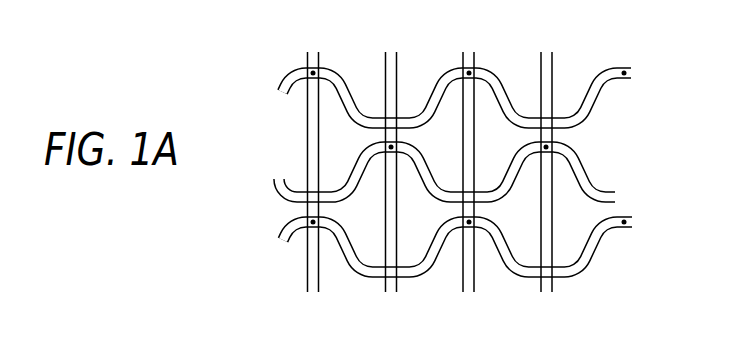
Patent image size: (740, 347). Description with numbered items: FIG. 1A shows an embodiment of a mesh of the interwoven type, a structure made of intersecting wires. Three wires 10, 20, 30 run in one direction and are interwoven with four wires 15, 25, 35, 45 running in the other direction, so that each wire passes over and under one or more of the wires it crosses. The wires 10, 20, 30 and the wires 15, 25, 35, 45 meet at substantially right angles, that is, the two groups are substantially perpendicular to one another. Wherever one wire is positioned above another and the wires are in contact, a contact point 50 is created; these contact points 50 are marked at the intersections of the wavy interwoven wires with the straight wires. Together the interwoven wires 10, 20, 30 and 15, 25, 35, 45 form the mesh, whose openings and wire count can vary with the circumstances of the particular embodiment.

The wire 10 is at (606, 68).
The wire 20 is at (598, 173).
The wire 30 is at (597, 252).
The wire 15 is at (307, 284).
The wire 25 is at (385, 284).
The wire 35 is at (462, 284).
The wire 45 is at (540, 284).
The contact point 50 is at (312, 72).